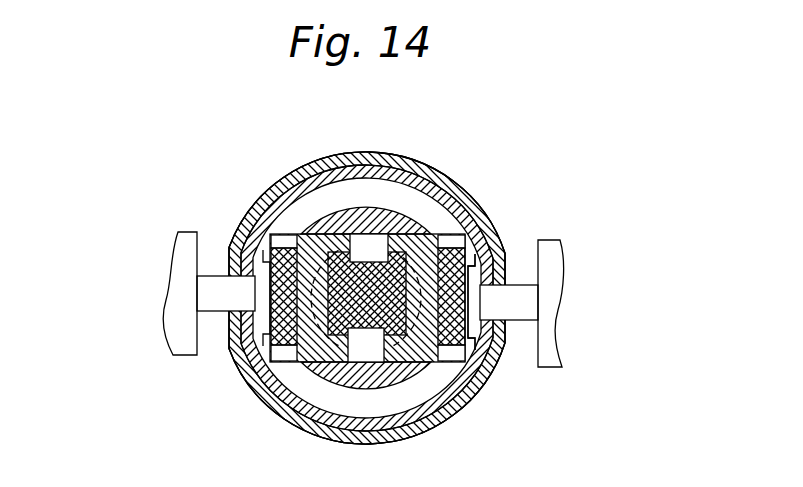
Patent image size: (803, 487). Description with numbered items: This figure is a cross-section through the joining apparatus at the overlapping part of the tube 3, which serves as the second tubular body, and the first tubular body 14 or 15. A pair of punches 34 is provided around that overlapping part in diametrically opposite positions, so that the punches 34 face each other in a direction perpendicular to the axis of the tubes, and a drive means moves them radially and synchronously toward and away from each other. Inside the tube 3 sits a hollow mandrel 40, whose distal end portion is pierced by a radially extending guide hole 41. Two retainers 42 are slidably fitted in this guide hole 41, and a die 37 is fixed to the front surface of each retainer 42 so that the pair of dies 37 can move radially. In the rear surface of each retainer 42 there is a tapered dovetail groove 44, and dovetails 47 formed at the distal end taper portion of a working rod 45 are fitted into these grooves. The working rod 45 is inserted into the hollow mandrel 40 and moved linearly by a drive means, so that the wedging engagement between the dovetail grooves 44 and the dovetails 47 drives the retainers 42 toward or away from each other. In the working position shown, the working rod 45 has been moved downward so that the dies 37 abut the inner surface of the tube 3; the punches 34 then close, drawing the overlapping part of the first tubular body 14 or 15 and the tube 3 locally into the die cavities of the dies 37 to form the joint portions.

The tube 3 is at (357, 172).
The first tubular body 14 is at (325, 441).
The first tubular body 15 is at (367, 298).
The punch 34 is at (158, 240).
The die 37 is at (230, 240).
The hollow mandrel 40 is at (290, 173).
The guide hole 41 is at (288, 246).
The retainer 42 is at (410, 243).
The tapered dovetail groove 44 is at (462, 390).
The working rod 45 is at (495, 358).
The dovetail 47 is at (275, 398).